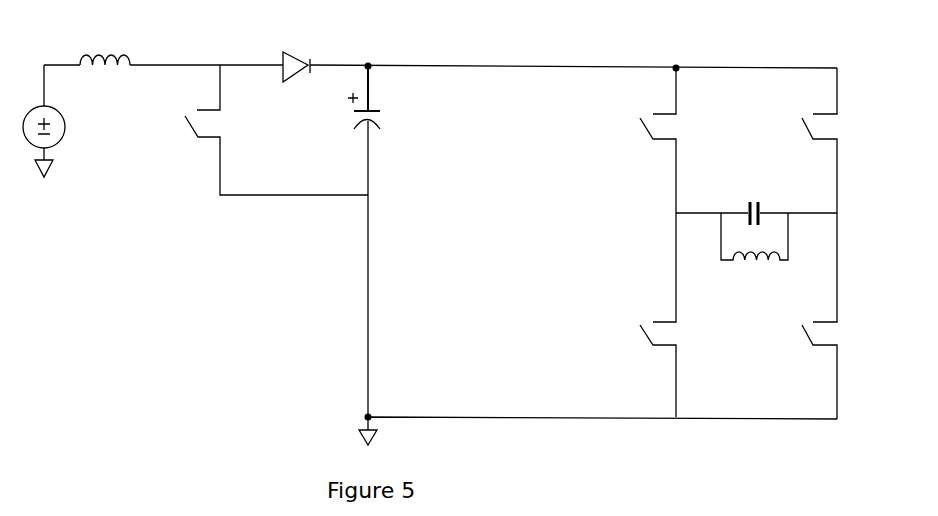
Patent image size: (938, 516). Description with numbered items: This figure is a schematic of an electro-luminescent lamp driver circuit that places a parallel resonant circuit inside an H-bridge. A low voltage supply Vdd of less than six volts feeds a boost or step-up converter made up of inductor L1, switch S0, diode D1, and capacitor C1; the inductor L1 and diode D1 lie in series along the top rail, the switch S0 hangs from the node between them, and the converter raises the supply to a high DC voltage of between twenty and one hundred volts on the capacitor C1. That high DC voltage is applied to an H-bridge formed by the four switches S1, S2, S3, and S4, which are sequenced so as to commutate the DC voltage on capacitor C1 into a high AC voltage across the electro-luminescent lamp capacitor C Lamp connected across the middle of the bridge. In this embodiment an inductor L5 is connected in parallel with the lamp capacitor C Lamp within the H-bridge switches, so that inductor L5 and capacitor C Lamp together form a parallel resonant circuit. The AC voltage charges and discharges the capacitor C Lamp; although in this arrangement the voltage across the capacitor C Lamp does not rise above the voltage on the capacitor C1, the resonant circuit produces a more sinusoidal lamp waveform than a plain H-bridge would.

The low voltage supply Vdd is at (74, 141).
The inductor L1 is at (105, 42).
The diode D1 is at (297, 52).
The switch S0 is at (273, 130).
The capacitor C1 is at (385, 241).
The switch S1 is at (653, 140).
The switch S2 is at (813, 140).
The switch S3 is at (653, 315).
The switch S4 is at (813, 316).
The electro-luminescent lamp capacitor C Lamp is at (756, 196).
The inductor L5 is at (754, 251).